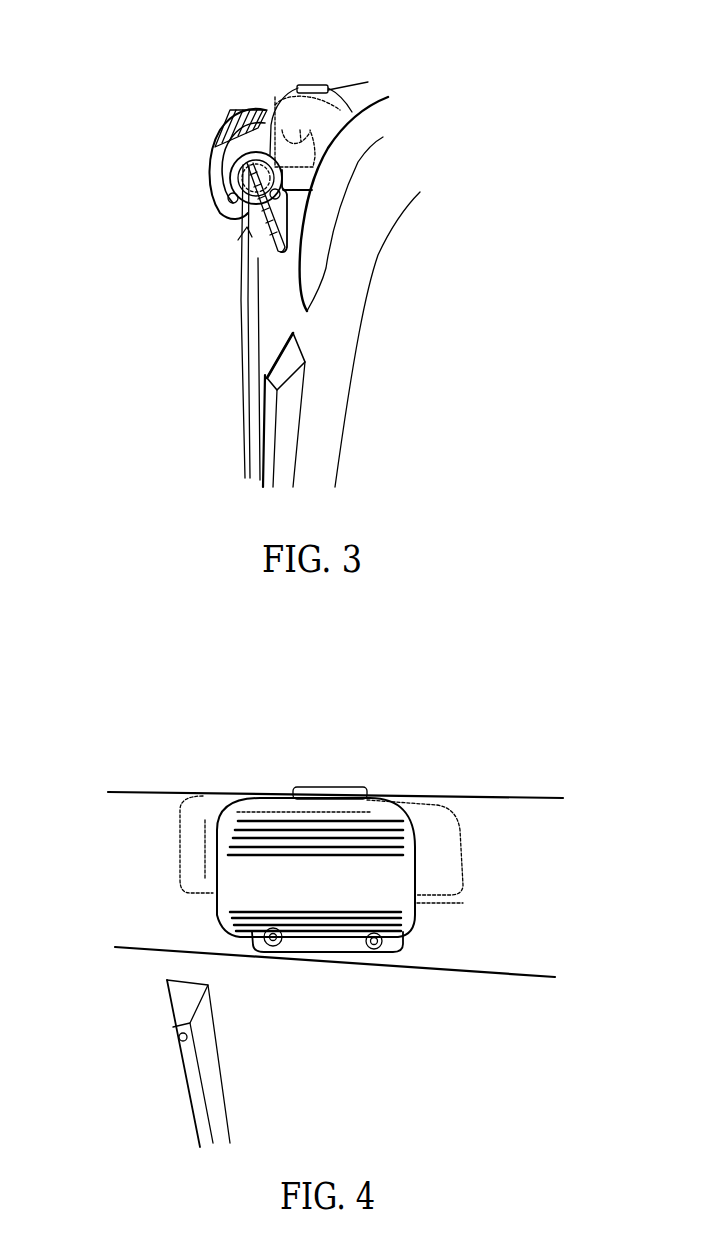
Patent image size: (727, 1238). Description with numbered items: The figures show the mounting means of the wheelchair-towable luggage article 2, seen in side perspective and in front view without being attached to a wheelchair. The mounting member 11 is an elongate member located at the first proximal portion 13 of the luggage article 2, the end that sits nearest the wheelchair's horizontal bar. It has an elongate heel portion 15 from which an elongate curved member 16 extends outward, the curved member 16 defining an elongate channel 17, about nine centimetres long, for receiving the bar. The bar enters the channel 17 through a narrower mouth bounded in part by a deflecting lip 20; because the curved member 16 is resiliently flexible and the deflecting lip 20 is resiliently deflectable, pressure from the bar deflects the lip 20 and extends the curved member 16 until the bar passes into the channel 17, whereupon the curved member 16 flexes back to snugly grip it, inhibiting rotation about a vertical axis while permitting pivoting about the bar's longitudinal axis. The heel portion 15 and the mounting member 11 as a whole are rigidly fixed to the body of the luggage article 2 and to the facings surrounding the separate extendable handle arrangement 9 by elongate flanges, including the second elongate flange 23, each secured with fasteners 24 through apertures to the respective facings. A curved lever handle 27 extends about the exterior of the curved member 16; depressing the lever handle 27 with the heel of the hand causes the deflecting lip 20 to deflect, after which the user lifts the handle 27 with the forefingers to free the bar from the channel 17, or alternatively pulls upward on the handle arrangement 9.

In FIG. 3, the luggage article 2 is at (368, 345).
In FIG. 3, the extendable handle arrangement 9 is at (340, 85).
In FIG. 4, the extendable handle arrangement 9 is at (306, 790).
In FIG. 3, the mounting member 11 is at (112, 244).
In FIG. 3, the first proximal portion 13 is at (388, 168).
In FIG. 3, the heel portion 15 is at (243, 227).
In FIG. 3, the elongate curved member 16 is at (275, 100).
In FIG. 3, the elongate channel 17 is at (217, 190).
In FIG. 3, the deflecting lip 20 is at (243, 217).
In FIG. 3, the second elongate flange 23 is at (277, 230).
In FIG. 4, the second elongate flange 23 is at (303, 945).
In FIG. 4, the fasteners 24 is at (385, 950).
In FIG. 3, the curved lever handle 27 is at (224, 113).
In FIG. 4, the curved lever handle 27 is at (366, 867).